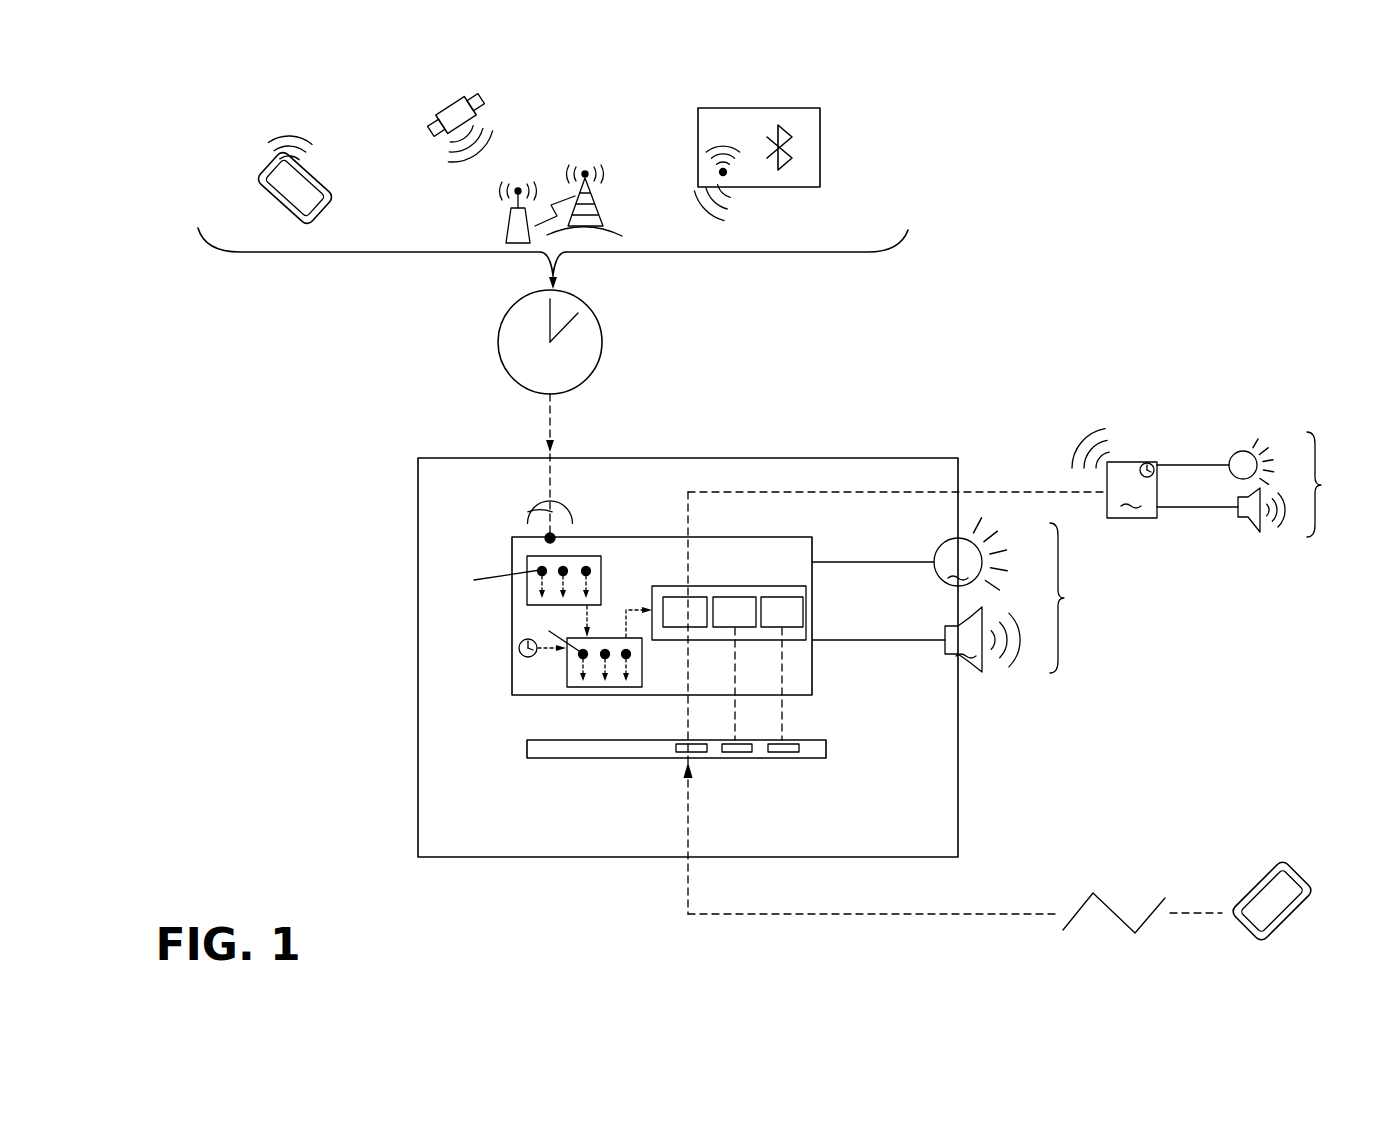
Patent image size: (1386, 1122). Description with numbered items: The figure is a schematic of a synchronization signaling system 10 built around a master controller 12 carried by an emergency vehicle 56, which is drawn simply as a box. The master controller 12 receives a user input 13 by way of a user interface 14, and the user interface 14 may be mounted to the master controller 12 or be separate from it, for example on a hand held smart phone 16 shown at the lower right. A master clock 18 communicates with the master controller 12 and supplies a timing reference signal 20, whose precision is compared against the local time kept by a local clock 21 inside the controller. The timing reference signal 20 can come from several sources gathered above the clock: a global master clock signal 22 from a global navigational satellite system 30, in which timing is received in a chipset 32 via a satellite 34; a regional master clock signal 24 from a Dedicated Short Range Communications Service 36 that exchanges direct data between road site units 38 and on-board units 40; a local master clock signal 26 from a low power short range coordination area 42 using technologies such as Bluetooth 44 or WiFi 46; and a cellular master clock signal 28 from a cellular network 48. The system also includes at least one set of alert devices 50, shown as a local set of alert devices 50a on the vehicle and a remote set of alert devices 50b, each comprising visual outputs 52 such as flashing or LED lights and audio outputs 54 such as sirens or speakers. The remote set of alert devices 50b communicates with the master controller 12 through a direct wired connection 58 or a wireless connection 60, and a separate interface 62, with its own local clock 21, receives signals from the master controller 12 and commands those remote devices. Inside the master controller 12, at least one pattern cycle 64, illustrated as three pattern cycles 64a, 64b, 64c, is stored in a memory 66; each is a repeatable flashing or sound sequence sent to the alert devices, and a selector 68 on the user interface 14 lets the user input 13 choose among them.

The synchronization signaling system 10 is at (1160, 232).
The master controller 12 is at (532, 673).
The user input 13 is at (688, 795).
The user interface 14 is at (598, 748).
The smart phone 16 is at (1303, 875).
The master clock 18 is at (498, 341).
The timing reference signal 20 is at (550, 410).
The local clock 21 is at (519, 647).
The global master clock signal 22 is at (467, 158).
The regional master clock signal 24 is at (606, 168).
The local master clock signal 26 is at (712, 222).
The cellular master clock signal 28 is at (282, 113).
The global navigational satellite system 30 is at (495, 92).
The chipset 32 is at (591, 556).
The satellite 34 is at (445, 104).
The Dedicated Short Range Communications Service 36 is at (562, 140).
The road site unit 38 is at (506, 223).
The on-board unit 40 is at (546, 536).
The short range coordination area 42 is at (822, 125).
The Bluetooth 44 is at (790, 163).
The WiFi 46 is at (732, 136).
The cellular network 48 is at (250, 150).
The set of alert devices 50 is at (970, 505).
The local set of alert devices 50a is at (1081, 598).
The remote set of alert devices 50b is at (1337, 484).
The visual outputs 52 is at (1215, 410).
The audio outputs 54 is at (1251, 521).
The emergency vehicle 56 is at (958, 802).
The direct wired connection 58 is at (837, 493).
The wireless connection 60 is at (1090, 424).
The separate interface 62 is at (1172, 490).
The pattern cycle 64 is at (806, 600).
The alert pattern cycle 64a is at (685, 612).
The pattern cycle 64b is at (734, 612).
The pattern cycle 64c is at (782, 612).
The memory 66 is at (793, 640).
The selector 68 is at (702, 752).